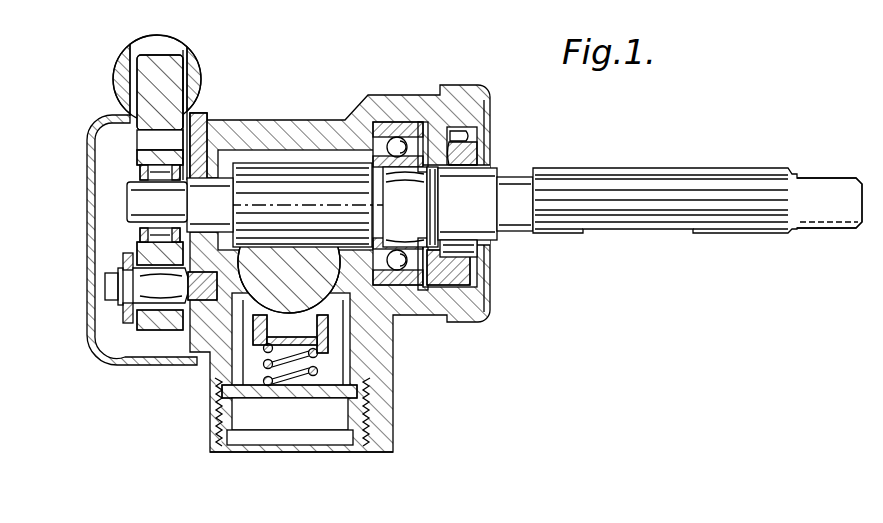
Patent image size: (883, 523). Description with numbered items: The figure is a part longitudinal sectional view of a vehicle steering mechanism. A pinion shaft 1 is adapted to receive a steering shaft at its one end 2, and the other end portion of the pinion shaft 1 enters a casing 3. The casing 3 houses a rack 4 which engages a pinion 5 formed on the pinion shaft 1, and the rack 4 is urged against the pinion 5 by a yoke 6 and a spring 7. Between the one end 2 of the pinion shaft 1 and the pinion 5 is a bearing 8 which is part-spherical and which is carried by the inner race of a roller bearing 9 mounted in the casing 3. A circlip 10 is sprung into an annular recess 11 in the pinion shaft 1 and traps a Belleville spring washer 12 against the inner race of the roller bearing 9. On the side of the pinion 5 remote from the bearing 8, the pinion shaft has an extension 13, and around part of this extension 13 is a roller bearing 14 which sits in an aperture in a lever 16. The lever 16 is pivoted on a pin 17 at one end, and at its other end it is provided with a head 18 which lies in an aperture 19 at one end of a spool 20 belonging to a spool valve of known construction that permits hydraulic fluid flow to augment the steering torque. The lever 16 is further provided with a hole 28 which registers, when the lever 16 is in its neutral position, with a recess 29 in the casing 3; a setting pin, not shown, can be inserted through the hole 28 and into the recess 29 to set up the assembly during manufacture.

The pinion shaft 1 is at (566, 184).
The one end 2 is at (822, 176).
The casing 3 is at (313, 120).
The rack 4 is at (397, 317).
The pinion 5 is at (278, 170).
The yoke 6 is at (248, 358).
The spring 7 is at (318, 372).
The bearing 8 is at (410, 182).
The roller bearing 9 is at (393, 142).
The circlip 10 is at (478, 248).
The annular recess 11 is at (435, 190).
The Belleville spring washer 12 is at (448, 263).
The extension 13 is at (200, 197).
The roller bearing 14 is at (140, 173).
The lever 16 is at (152, 322).
The pin 17 is at (150, 282).
The head 18 is at (172, 63).
The aperture 19 is at (148, 40).
The spool 20 is at (127, 72).
The hole 28 is at (147, 143).
The recess 29 is at (199, 140).